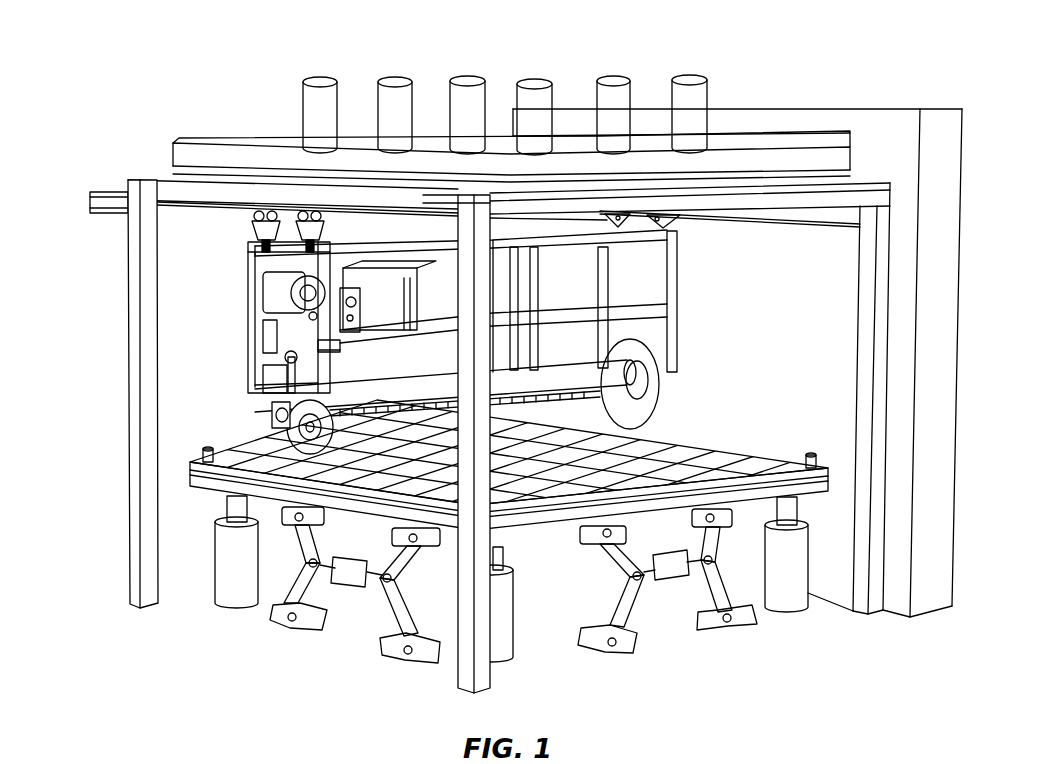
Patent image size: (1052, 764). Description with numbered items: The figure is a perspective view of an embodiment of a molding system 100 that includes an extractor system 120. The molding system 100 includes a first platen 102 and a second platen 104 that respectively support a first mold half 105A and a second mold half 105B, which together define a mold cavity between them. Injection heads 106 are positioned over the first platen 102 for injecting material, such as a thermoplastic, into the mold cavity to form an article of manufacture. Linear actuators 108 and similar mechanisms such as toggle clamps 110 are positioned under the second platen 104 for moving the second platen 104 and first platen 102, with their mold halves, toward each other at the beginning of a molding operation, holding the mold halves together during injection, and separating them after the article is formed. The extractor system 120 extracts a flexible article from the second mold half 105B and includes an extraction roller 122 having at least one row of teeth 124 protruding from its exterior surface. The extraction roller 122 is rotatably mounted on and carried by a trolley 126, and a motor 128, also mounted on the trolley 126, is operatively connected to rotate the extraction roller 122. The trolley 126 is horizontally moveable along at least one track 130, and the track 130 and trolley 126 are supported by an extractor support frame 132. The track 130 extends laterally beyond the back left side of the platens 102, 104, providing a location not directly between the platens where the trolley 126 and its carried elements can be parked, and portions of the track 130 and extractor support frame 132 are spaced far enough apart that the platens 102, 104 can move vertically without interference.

The molding system 100 is at (186, 56).
The first platen 102 is at (227, 482).
The second platen 104 is at (230, 155).
The first mold half 105A is at (840, 179).
The second mold half 105B is at (258, 445).
The injection heads 106 is at (329, 110).
The linear actuators 108 is at (232, 563).
The toggle clamps 110 is at (355, 608).
The extractor system 120 is at (712, 321).
The extraction roller 122 is at (632, 378).
The teeth 124 is at (640, 410).
The trolley 126 is at (680, 270).
The motor 128 is at (272, 297).
The track 130 is at (110, 208).
The extractor support frame 132 is at (130, 431).